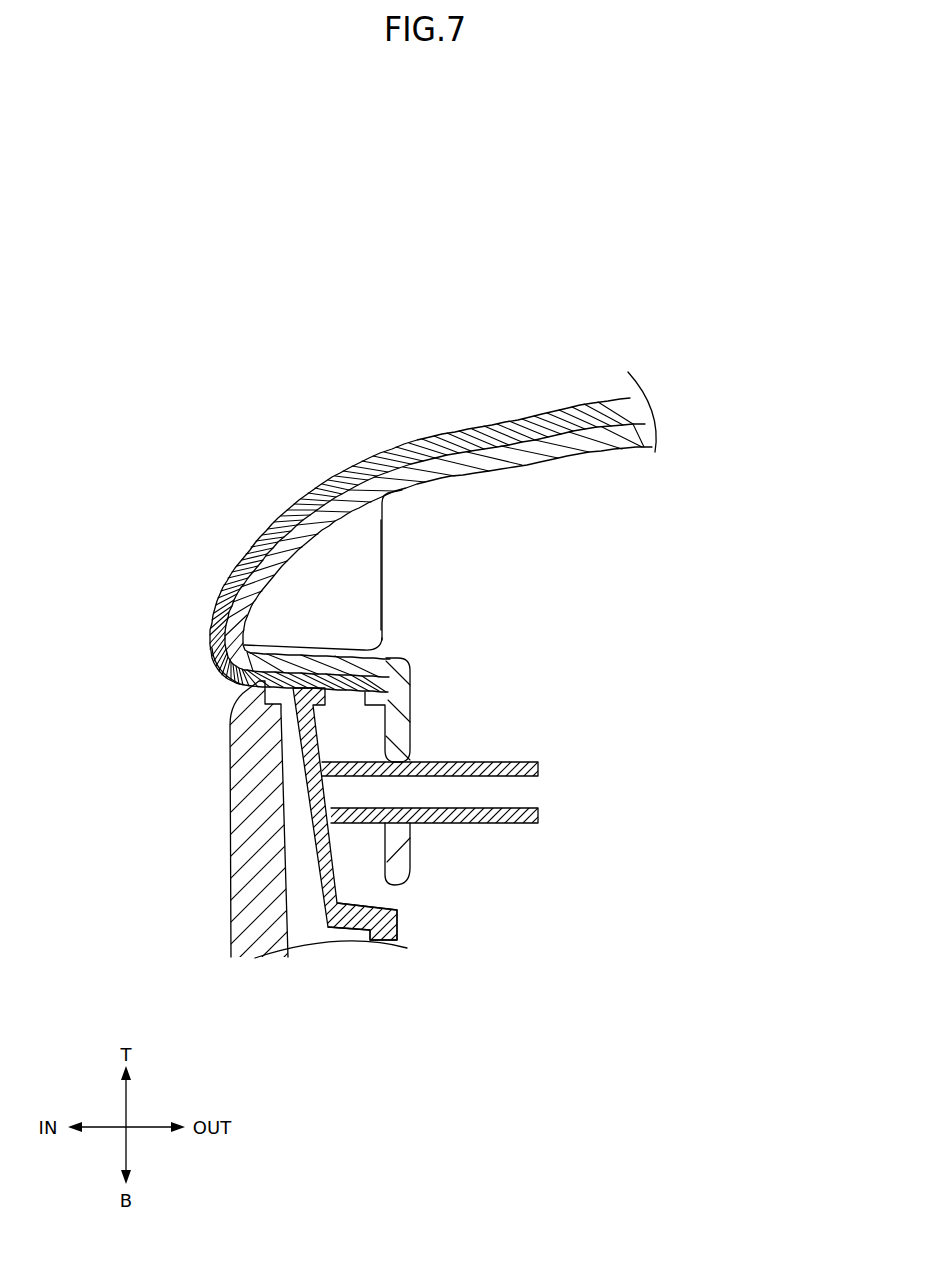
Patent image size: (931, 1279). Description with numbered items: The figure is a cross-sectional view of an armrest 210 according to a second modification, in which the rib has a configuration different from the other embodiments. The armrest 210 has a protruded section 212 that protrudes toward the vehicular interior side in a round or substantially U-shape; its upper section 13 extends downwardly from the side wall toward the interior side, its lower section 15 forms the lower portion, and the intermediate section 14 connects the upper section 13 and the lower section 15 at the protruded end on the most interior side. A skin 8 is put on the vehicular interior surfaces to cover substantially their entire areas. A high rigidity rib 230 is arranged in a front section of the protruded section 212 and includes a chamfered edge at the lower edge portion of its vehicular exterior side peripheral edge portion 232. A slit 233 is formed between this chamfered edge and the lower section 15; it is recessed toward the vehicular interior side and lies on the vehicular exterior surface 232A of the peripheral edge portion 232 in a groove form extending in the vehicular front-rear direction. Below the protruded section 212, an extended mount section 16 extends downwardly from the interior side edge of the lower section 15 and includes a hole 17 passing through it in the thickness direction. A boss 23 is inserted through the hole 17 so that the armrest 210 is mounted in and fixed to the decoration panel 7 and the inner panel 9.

The armrest 210 is at (423, 176).
The protruded section 212 is at (254, 358).
The skin 8 is at (524, 421).
The upper section 13 is at (437, 466).
The intermediate section 14 is at (234, 621).
The high rigidity rib 230 is at (303, 581).
The vehicular exterior side peripheral edge portion 232 is at (368, 573).
The vehicular exterior surface 232A is at (384, 587).
The slit 233 is at (380, 654).
The extended mount section 16 is at (394, 737).
The lower section 15 is at (332, 703).
The hole 17 is at (413, 777).
The boss 23 is at (508, 813).
The inner panel 9 is at (390, 919).
The decoration panel 7 is at (266, 932).